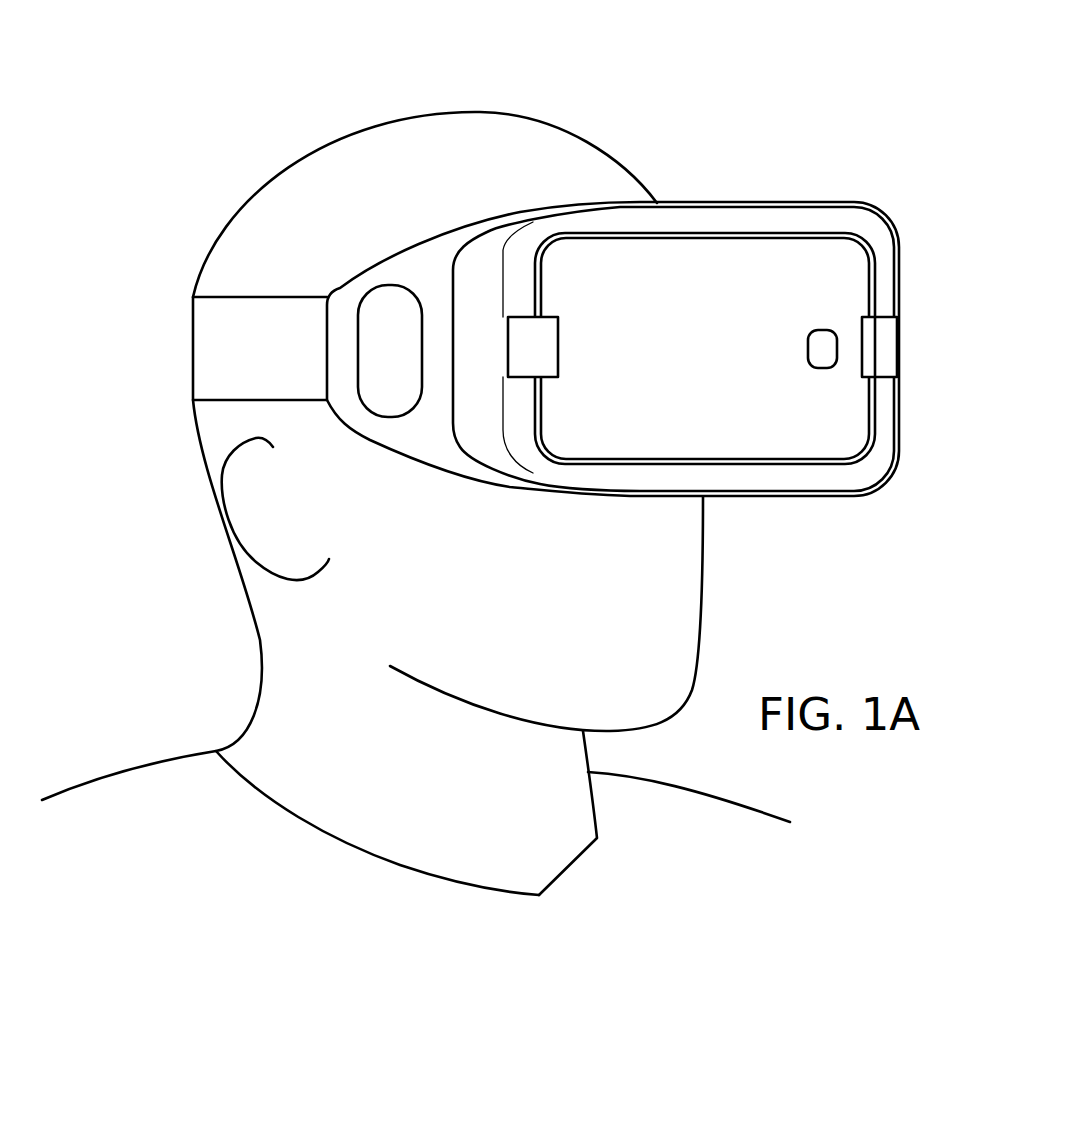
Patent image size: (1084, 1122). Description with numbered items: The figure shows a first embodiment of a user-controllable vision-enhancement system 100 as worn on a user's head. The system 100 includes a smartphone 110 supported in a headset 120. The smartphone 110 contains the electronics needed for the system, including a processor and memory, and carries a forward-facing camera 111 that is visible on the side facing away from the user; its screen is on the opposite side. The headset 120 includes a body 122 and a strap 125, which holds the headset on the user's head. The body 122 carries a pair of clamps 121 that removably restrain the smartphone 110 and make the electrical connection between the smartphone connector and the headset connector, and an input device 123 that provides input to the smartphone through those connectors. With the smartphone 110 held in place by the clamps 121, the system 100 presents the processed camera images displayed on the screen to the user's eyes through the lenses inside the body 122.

The user-controllable vision-enhancement system 100 is at (479, 48).
The smartphone 110 is at (760, 265).
The forward-facing camera 111 is at (825, 368).
The headset 120 is at (330, 115).
The clamps 121 is at (527, 315).
The body 122 is at (749, 194).
The input device 123 is at (390, 290).
The strap 125 is at (268, 295).